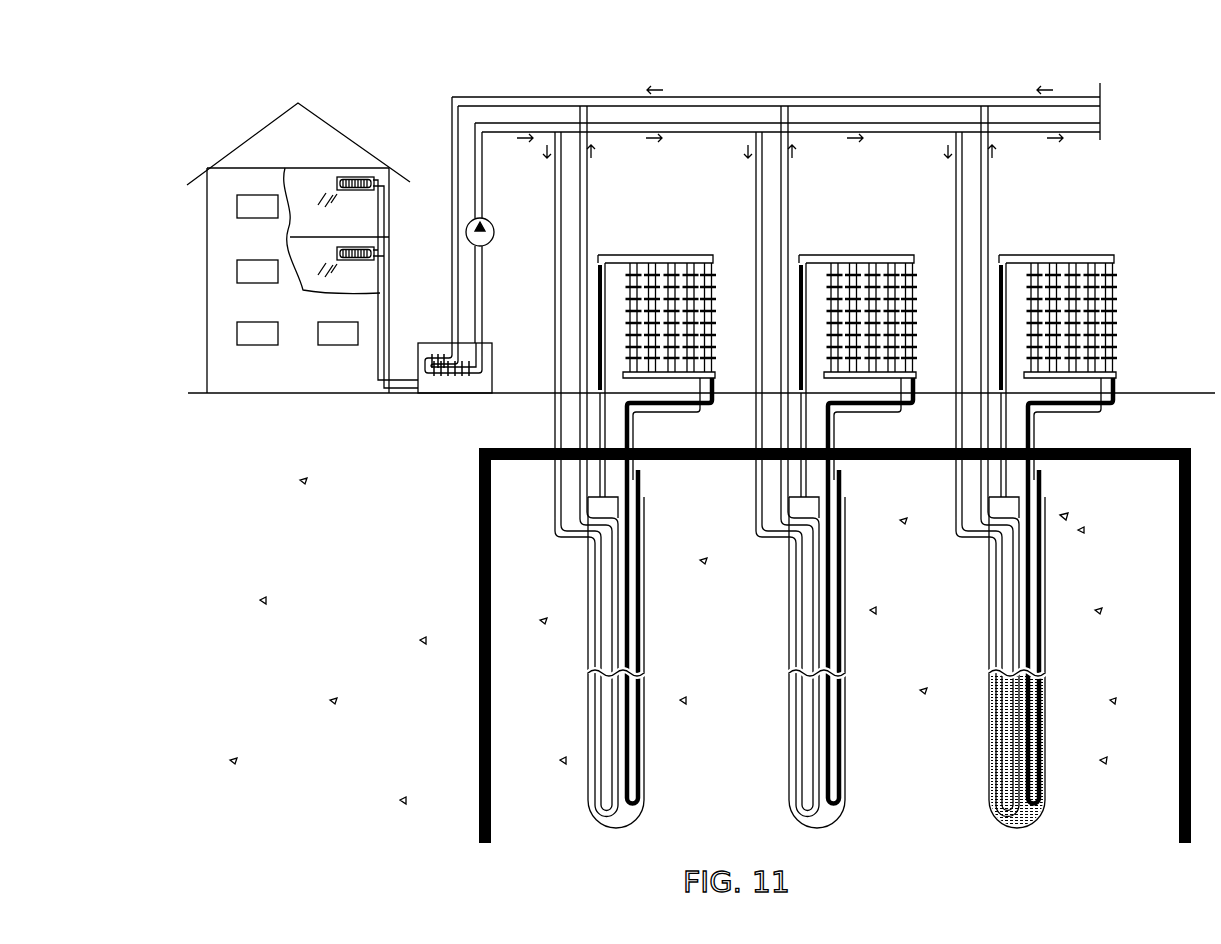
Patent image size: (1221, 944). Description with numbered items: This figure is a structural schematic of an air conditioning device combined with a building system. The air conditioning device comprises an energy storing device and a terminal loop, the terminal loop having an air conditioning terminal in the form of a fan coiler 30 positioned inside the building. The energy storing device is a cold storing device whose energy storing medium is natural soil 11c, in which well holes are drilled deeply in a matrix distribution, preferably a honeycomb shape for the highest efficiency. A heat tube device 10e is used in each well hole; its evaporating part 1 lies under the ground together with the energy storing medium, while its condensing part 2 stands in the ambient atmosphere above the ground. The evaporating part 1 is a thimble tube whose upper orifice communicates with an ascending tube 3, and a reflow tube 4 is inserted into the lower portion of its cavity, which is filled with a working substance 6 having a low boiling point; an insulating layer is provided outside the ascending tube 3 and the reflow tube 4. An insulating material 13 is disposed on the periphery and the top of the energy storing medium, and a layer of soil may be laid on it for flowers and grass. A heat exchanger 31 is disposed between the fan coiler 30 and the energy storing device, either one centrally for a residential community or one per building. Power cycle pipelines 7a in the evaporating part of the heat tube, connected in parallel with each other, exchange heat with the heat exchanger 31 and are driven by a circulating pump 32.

The evaporating part 1 is at (1032, 820).
The condensing part 2 is at (1083, 257).
The ascending tube 3 is at (1008, 273).
The reflow tube 4 is at (1033, 598).
The working substance 6 is at (1042, 762).
The power cycle pipelines 7a is at (1092, 115).
The heat tube device 10e is at (1093, 281).
The natural soil 11c is at (1082, 478).
The insulating material 13 is at (1210, 419).
The fan coiler 30 is at (357, 177).
The heat exchanger 31 is at (485, 353).
The circulating pump 32 is at (482, 225).